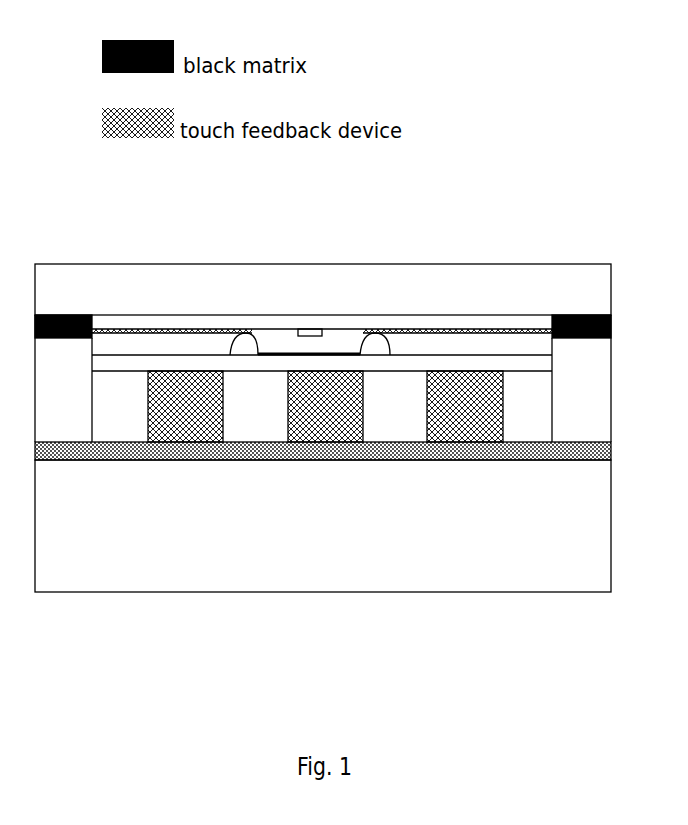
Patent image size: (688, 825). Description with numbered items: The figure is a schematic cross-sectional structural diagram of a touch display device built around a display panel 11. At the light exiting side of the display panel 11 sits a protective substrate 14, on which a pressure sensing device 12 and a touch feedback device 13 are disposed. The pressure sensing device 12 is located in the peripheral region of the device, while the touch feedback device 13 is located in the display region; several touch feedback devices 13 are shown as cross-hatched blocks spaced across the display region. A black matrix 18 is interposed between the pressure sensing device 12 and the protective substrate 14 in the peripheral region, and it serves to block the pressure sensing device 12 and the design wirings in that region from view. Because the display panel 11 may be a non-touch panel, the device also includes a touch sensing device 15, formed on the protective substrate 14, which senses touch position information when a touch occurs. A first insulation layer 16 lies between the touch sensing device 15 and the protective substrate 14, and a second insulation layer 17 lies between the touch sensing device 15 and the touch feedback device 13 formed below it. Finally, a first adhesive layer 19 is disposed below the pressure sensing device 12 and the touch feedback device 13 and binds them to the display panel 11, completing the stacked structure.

The display panel 11 is at (263, 555).
The pressure sensing device 12 is at (58, 425).
The touch feedback device 13 is at (190, 425).
The protective substrate 14 is at (305, 282).
The touch sensing device 15 is at (448, 349).
The first insulation layer 16 is at (385, 322).
The second insulation layer 17 is at (505, 361).
The black matrix 18 is at (59, 316).
The first adhesive layer 19 is at (400, 452).